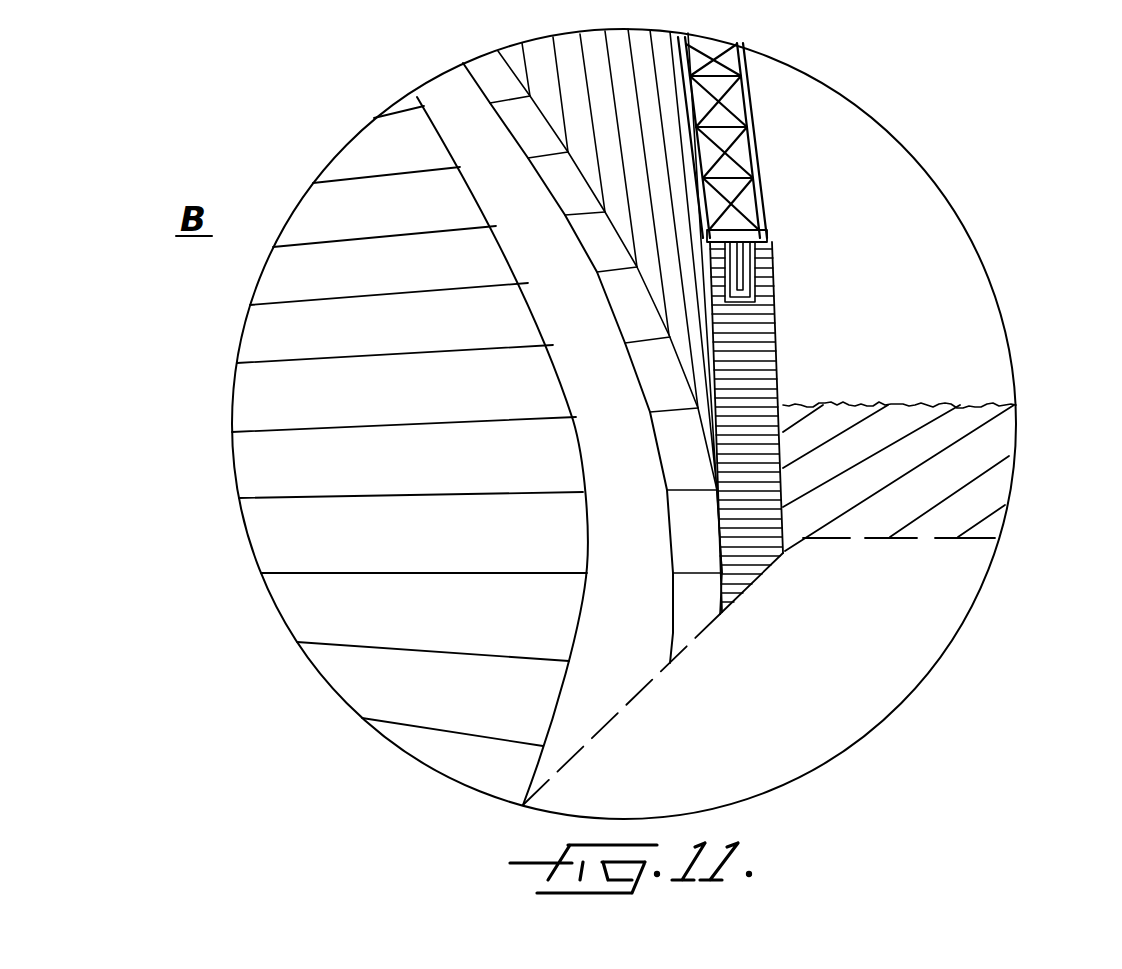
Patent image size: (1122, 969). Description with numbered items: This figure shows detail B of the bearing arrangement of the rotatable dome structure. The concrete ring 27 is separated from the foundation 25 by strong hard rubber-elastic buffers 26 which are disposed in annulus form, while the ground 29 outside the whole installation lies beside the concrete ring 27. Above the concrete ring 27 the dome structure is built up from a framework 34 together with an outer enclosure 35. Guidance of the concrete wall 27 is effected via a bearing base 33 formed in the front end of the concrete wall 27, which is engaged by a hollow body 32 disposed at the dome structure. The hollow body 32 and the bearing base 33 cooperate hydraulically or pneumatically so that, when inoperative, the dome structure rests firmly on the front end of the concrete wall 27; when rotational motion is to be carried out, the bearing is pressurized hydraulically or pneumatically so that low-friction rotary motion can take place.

The foundation 25 is at (360, 386).
The rubber-elastic buffers 26 is at (607, 464).
The concrete ring 27 is at (743, 337).
The ground 29 is at (957, 462).
The hollow body 32 is at (740, 263).
The bearing base 33 is at (786, 280).
The framework 34 is at (748, 93).
The outer enclosure 35 is at (757, 160).